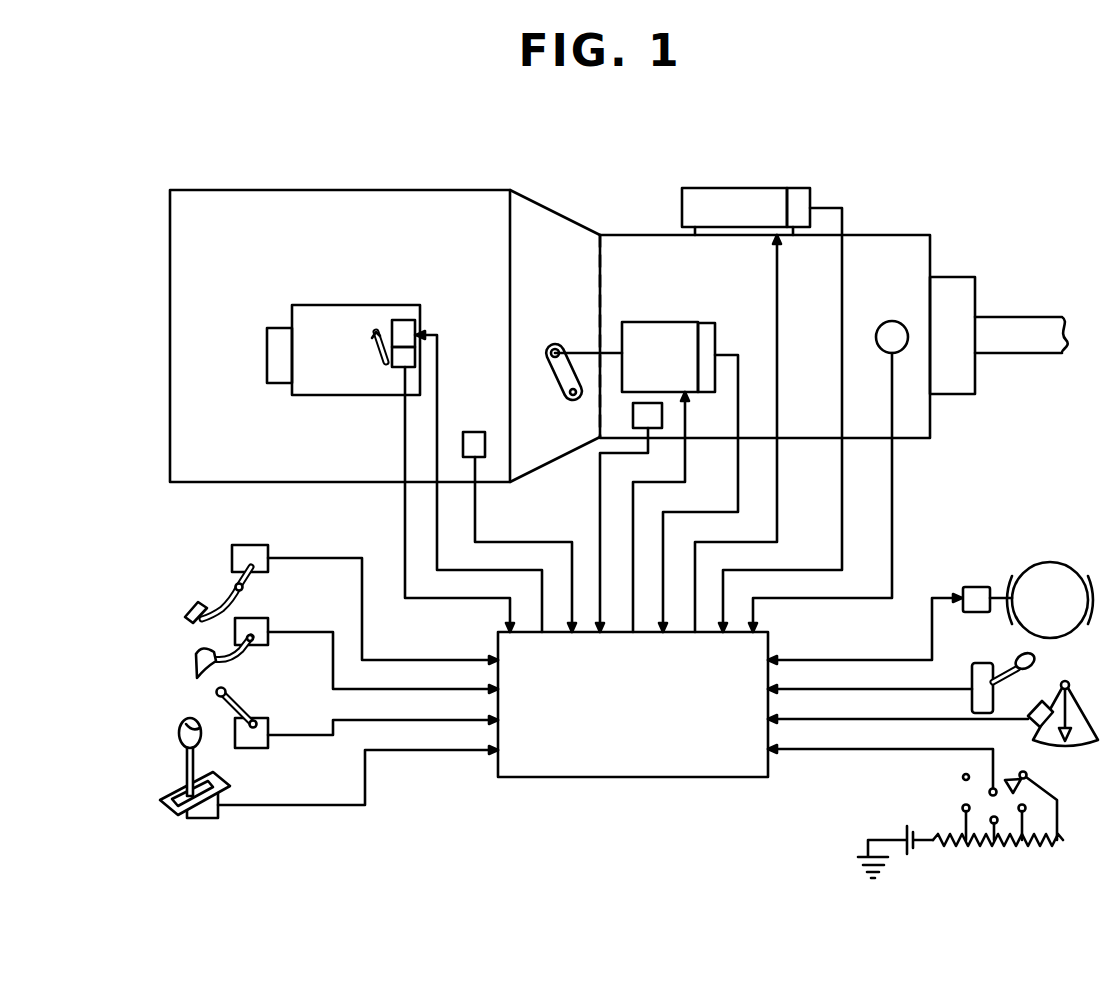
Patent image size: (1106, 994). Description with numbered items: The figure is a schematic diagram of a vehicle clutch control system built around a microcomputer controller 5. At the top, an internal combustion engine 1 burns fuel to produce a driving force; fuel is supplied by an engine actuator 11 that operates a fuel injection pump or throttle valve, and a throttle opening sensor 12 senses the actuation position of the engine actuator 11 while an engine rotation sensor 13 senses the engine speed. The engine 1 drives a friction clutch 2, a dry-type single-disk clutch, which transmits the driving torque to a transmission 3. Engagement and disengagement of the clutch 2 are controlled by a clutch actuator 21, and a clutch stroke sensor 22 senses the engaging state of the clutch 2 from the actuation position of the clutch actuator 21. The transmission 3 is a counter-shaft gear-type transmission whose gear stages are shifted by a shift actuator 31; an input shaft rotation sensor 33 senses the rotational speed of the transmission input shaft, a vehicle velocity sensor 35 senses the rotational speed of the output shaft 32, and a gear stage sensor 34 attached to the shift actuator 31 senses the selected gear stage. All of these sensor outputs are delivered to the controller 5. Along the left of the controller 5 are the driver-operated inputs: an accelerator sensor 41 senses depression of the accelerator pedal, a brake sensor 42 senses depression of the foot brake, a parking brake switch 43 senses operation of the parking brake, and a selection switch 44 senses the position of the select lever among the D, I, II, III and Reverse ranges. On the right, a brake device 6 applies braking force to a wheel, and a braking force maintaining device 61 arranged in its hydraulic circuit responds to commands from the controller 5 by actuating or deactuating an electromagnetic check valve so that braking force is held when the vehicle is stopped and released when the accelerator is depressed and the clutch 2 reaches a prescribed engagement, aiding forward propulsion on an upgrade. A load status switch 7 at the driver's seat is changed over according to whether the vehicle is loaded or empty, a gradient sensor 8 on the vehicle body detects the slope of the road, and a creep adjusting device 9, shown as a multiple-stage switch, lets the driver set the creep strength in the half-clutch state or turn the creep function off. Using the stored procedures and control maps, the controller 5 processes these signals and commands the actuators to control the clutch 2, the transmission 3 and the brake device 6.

The internal combustion engine 1 is at (402, 205).
The friction clutch 2 is at (552, 225).
The transmission 3 is at (862, 250).
The controller 5 is at (608, 760).
The brake device 6 is at (1045, 580).
The load status switch 7 is at (978, 674).
The gradient sensor 8 is at (1040, 700).
The creep adjusting device 9 is at (1000, 775).
The engine actuator 11 is at (410, 331).
The throttle opening sensor 12 is at (400, 360).
The engine rotation sensor 13 is at (476, 432).
The clutch actuator 21 is at (652, 338).
The clutch stroke sensor 22 is at (708, 335).
The shift actuator 31 is at (725, 200).
The output shaft 32 is at (1035, 335).
The input shaft rotation sensor 33 is at (650, 424).
The gear stage sensor 34 is at (797, 208).
The vehicle velocity sensor 35 is at (890, 332).
The accelerator sensor 41 is at (258, 552).
The brake sensor 42 is at (268, 625).
The parking brake switch 43 is at (268, 735).
The selection switch 44 is at (215, 812).
The braking force maintaining device 61 is at (970, 590).